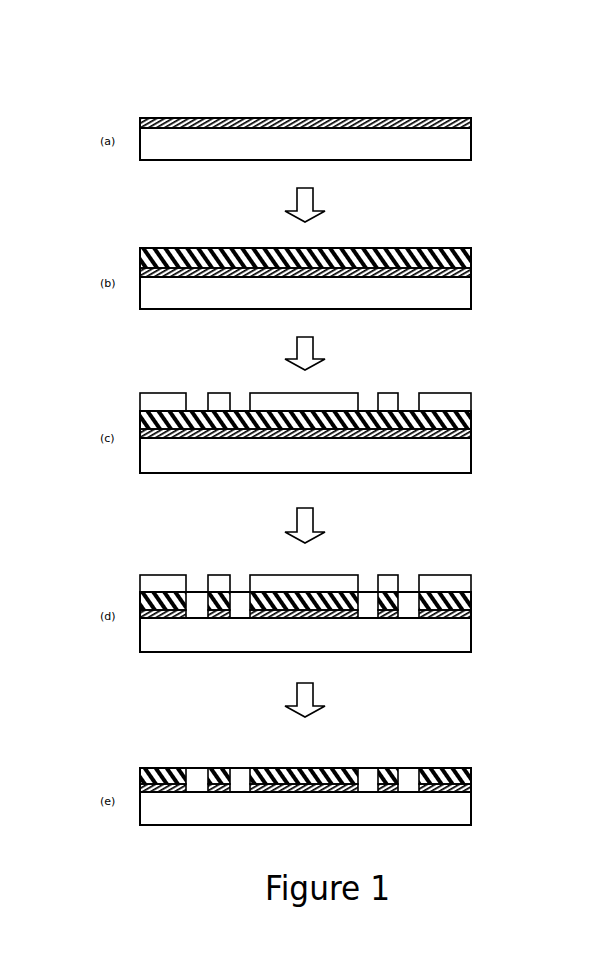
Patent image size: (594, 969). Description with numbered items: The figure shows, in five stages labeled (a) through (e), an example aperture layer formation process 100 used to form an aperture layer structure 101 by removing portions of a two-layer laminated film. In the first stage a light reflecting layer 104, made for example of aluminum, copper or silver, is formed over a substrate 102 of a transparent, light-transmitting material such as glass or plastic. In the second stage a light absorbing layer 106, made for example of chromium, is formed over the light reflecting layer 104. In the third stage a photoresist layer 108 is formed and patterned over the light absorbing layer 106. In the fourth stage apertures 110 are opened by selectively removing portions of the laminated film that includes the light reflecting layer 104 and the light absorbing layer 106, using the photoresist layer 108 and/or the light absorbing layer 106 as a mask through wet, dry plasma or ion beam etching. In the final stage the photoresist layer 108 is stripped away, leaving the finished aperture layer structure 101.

The aperture layer formation process 100 is at (60, 38).
The aperture layer structure 101 is at (124, 73).
The substrate 102 is at (357, 468).
The light reflecting layer 104 is at (359, 430).
The light absorbing layer 106 is at (351, 480).
The photoresist layer 108 is at (346, 452).
The apertures 110 is at (240, 599).